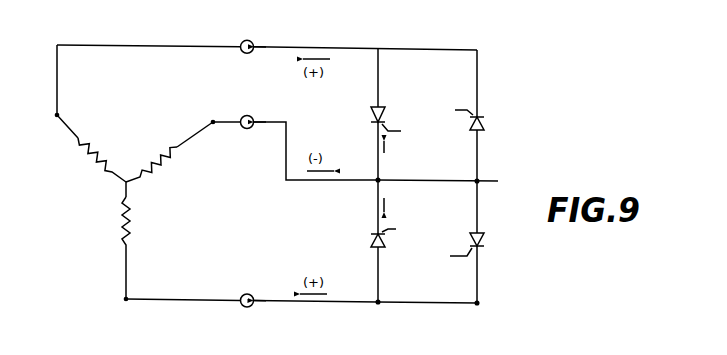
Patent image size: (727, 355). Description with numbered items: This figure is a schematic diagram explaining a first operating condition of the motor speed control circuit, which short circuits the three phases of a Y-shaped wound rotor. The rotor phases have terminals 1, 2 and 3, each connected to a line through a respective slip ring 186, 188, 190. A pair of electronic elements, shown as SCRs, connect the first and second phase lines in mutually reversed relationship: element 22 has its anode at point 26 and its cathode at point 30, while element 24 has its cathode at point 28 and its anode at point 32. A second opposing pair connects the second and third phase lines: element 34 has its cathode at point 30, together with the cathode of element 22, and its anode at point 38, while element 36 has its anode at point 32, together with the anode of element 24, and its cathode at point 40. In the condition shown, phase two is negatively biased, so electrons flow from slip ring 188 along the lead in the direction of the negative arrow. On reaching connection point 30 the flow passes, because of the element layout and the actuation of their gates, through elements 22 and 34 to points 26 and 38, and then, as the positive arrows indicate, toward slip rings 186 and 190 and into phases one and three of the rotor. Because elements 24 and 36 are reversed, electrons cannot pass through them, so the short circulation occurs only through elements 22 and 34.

The rotor phase terminal 1 is at (84, 113).
The rotor phase terminal 2 is at (172, 151).
The rotor phase terminal 3 is at (118, 248).
The electronic element 22 is at (383, 118).
The electronic element 24 is at (483, 121).
The connection point 26 is at (378, 48).
The connection point 28 is at (477, 50).
The connection point 30 is at (377, 180).
The connection point 32 is at (452, 183).
The electronic element 34 is at (374, 233).
The electronic element 36 is at (480, 233).
The connection point 38 is at (378, 302).
The connection point 40 is at (477, 303).
The slip ring 186 is at (242, 42).
The slip ring 188 is at (244, 116).
The slip ring 190 is at (241, 296).